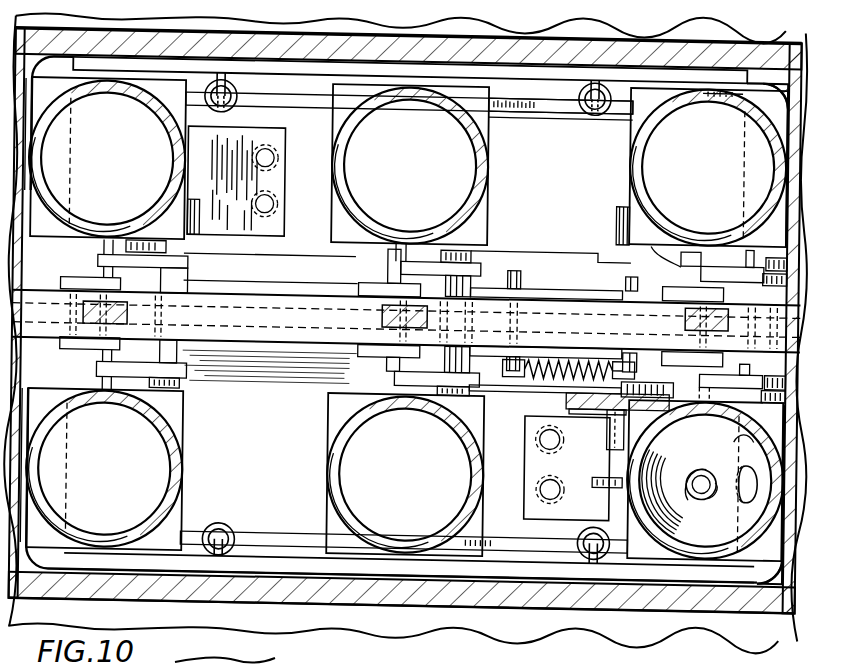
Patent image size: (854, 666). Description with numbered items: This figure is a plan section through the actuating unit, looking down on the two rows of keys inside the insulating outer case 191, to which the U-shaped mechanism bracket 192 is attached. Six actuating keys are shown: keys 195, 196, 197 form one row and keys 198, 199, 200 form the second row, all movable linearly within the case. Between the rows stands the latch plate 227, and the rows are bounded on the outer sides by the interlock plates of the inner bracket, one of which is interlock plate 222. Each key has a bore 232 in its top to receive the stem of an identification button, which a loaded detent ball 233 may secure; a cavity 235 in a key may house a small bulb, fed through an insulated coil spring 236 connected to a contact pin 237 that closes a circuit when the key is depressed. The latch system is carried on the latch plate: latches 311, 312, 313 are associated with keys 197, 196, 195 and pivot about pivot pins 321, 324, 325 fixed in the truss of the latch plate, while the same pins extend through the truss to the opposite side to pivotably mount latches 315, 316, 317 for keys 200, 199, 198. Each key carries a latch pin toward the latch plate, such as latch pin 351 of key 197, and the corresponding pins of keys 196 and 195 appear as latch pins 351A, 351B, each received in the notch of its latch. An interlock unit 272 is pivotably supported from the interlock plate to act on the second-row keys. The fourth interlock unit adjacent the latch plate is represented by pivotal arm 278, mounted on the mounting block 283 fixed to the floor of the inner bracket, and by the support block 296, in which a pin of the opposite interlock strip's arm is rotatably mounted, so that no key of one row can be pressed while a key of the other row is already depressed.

The actuating key 198 is at (175, 92).
The actuating key 199 is at (346, 102).
The actuating key 200 is at (640, 103).
The interlock unit 272 is at (545, 109).
The latch 315 is at (681, 248).
The latch 317 is at (75, 266).
The latch 316 is at (376, 256).
The latch plate 227 is at (344, 318).
The latch 313 is at (74, 359).
The pivot pin 325 is at (93, 385).
The bolt 351B is at (131, 393).
The latch 312 is at (380, 356).
The pivot pin 324 is at (391, 381).
The bolt 351A is at (391, 388).
The pivotal arm 278 is at (566, 403).
The latch 311 is at (681, 354).
The pivot pin 321 is at (680, 388).
The latch pin 351 is at (745, 396).
The detent ball 233 is at (742, 445).
The contact pin 237 is at (614, 474).
The coil spring 236 is at (701, 496).
The mounting block 283 is at (526, 480).
The bore 232 is at (140, 450).
The actuating key 195 is at (196, 455).
The actuating key 196 is at (328, 509).
The interlock plate 222 is at (344, 569).
The mechanism bracket 192 is at (441, 615).
The outer case 191 is at (557, 597).
The cavity 235 is at (689, 535).
The actuating key 197 is at (761, 567).
The support block 296 is at (305, 660).